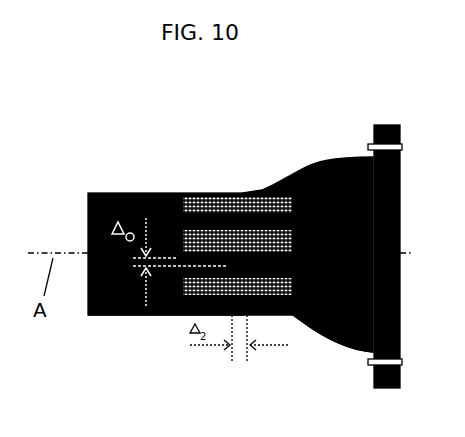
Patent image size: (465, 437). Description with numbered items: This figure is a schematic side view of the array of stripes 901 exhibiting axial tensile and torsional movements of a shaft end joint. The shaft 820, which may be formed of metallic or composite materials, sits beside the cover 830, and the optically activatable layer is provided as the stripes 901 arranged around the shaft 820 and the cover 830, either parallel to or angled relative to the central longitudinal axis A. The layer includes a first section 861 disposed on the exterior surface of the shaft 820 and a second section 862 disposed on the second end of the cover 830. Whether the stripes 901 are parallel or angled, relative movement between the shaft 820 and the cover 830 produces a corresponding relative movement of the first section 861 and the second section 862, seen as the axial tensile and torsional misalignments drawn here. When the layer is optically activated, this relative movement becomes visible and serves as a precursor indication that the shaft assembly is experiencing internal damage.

The shaft 820 is at (121, 193).
The array of stripes 901 is at (224, 294).
The cover 830 is at (331, 182).
The first section 861 is at (168, 315).
The second section 862 is at (280, 297).